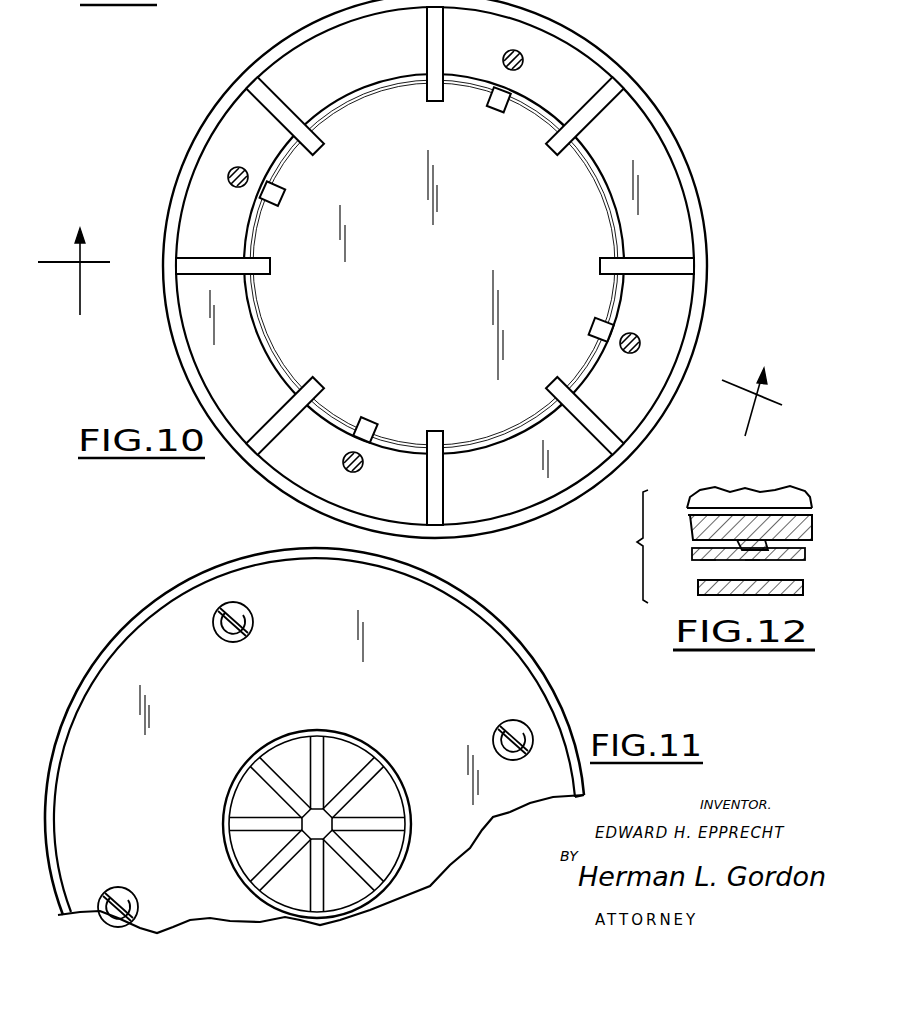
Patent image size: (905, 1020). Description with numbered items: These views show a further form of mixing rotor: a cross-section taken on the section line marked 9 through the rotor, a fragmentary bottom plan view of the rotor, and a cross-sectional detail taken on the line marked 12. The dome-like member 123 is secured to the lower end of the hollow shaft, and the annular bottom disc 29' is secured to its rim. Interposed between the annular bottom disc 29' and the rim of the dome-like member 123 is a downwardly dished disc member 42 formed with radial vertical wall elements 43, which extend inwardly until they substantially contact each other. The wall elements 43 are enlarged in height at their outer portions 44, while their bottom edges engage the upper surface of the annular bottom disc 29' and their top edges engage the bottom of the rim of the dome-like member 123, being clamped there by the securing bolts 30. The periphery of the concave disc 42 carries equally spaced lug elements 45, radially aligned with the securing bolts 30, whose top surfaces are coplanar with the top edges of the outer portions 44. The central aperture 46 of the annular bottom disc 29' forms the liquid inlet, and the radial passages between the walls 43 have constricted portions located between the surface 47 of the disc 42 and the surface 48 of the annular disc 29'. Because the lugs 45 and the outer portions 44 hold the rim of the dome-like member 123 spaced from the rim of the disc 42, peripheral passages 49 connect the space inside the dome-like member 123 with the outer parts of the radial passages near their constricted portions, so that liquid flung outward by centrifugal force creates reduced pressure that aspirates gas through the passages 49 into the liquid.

In FIG. 10, the section line 9- 9 is at (410, 334).
In FIG. 10, the frame 12 is at (613, 0).
In FIG. 10, the annular bottom disc 29' is at (458, 269).
In FIG. 11, the annular bottom disc 29' is at (314, 740).
In FIG. 12, the annular bottom disc 29' is at (730, 598).
In FIG. 10, the securing bolts 30 is at (523, 61).
In FIG. 11, the securing bolts 30 is at (512, 722).
In FIG. 10, the downwardly dished disc member 42 is at (577, 185).
In FIG. 11, the downwardly dished disc member 42 is at (337, 807).
In FIG. 12, the downwardly dished disc member 42 is at (799, 554).
In FIG. 11, the radial vertical wall elements 43 is at (313, 765).
In FIG. 10, the outer portions of the radial wall elements 44 is at (641, 257).
In FIG. 10, the lug elements 45 is at (497, 112).
In FIG. 12, the lug elements 45 is at (759, 486).
In FIG. 11, the central aperture 46 is at (392, 796).
In FIG. 12, the surface of the disc 47 is at (745, 561).
In FIG. 12, the surface of the annular member 48 is at (730, 578).
In FIG. 12, the passages 49 is at (800, 546).
In FIG. 12, the dome-like member 123 is at (790, 523).